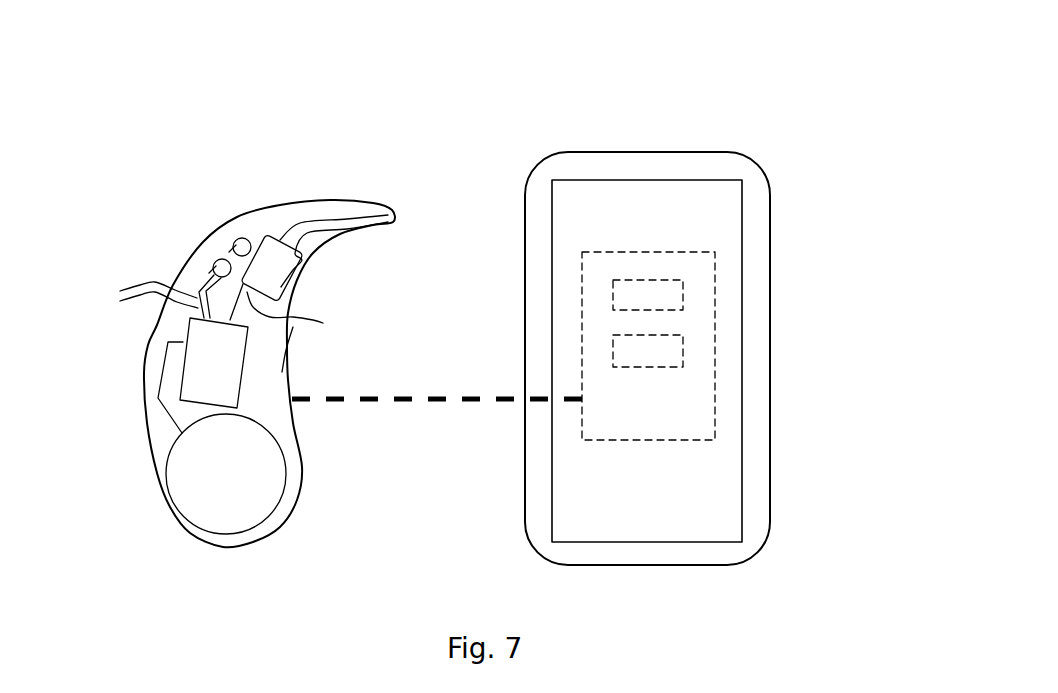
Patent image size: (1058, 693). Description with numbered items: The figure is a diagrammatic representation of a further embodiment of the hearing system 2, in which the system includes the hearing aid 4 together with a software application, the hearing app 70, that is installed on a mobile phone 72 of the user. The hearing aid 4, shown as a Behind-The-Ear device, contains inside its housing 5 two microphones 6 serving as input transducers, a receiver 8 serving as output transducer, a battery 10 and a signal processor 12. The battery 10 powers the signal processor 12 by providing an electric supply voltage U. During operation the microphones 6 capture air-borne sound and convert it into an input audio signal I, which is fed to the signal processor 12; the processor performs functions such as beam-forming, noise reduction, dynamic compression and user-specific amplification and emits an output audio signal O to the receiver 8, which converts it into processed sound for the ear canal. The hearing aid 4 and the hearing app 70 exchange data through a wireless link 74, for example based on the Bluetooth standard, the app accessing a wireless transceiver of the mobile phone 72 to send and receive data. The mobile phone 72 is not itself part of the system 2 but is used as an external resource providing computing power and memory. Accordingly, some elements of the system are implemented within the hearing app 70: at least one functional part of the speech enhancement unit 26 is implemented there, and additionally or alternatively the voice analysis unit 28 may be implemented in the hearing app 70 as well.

The hearing system 2 is at (334, 84).
The hearing aid 4 is at (174, 192).
The housing 5 is at (304, 483).
The microphones 6 is at (240, 239).
The receiver 8 is at (307, 280).
The battery 10 is at (190, 527).
The signal processor 12 is at (249, 353).
The speech enhancement unit 26 is at (683, 293).
The voice analysis unit 28 is at (683, 352).
The hearing app 70 is at (655, 252).
The mobile phone 72 is at (710, 565).
The wireless link 74 is at (440, 398).
The input audio signal I is at (151, 295).
The output audio signal O is at (295, 316).
The electric supply voltage U is at (155, 380).